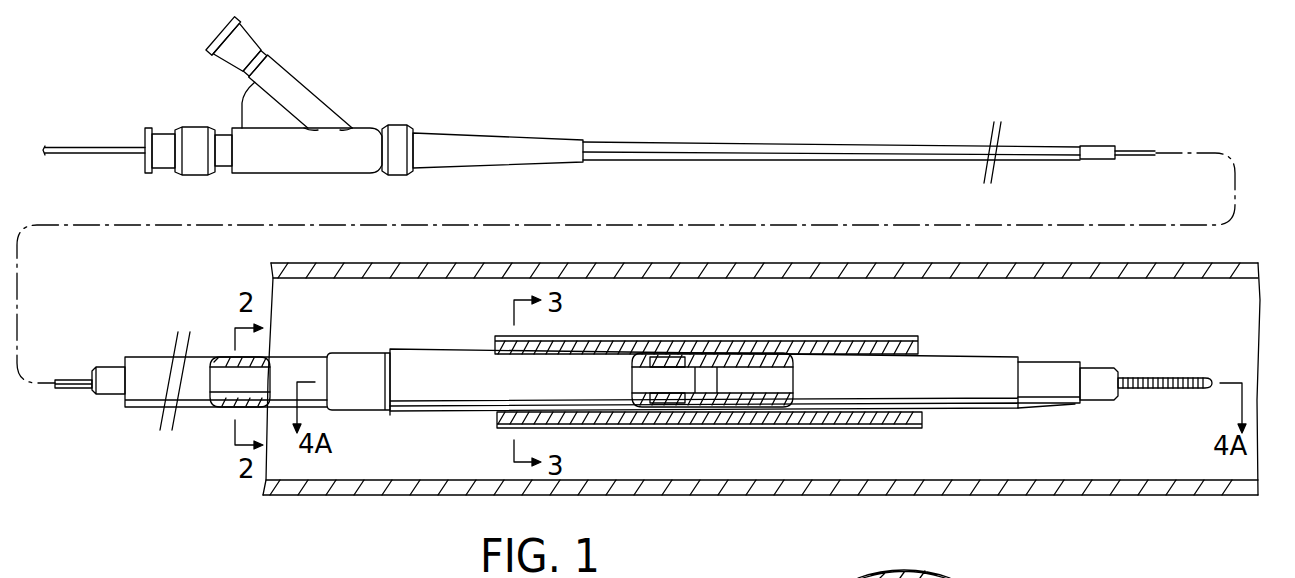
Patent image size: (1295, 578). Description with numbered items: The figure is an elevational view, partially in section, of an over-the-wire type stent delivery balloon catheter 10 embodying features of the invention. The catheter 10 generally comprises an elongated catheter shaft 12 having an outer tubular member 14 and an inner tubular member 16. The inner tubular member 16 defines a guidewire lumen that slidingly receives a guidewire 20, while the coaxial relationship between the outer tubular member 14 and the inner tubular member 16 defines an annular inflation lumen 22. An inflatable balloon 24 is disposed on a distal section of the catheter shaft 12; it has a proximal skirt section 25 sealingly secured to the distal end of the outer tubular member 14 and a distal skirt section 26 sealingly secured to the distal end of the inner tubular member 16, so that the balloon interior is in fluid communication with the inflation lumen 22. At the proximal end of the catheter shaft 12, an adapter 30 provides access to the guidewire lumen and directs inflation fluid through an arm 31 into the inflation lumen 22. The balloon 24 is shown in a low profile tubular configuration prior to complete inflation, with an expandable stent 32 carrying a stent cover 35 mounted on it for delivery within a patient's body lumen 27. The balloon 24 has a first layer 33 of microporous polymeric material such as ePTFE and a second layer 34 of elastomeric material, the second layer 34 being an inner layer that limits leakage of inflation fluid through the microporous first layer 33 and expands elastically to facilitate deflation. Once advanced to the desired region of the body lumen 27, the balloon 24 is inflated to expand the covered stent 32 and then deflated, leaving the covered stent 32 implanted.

The stent delivery balloon catheter 10 is at (881, 113).
The catheter shaft 12 is at (845, 162).
The outer tubular member 14 is at (1042, 162).
The inner tubular member 16 is at (1093, 147).
The guidewire 20 is at (105, 148).
The annular inflation lumen 22 is at (232, 400).
The inflatable balloon 24 is at (935, 383).
The proximal skirt section 25 is at (362, 353).
The distal skirt section 26 is at (1040, 405).
The body lumen 27 is at (1172, 326).
The adapter 30 is at (233, 128).
The arm 31 is at (322, 97).
The expandable stent 32 is at (730, 350).
The first layer 33 is at (483, 350).
The second layer 34 is at (665, 360).
The stent cover 35 is at (845, 347).